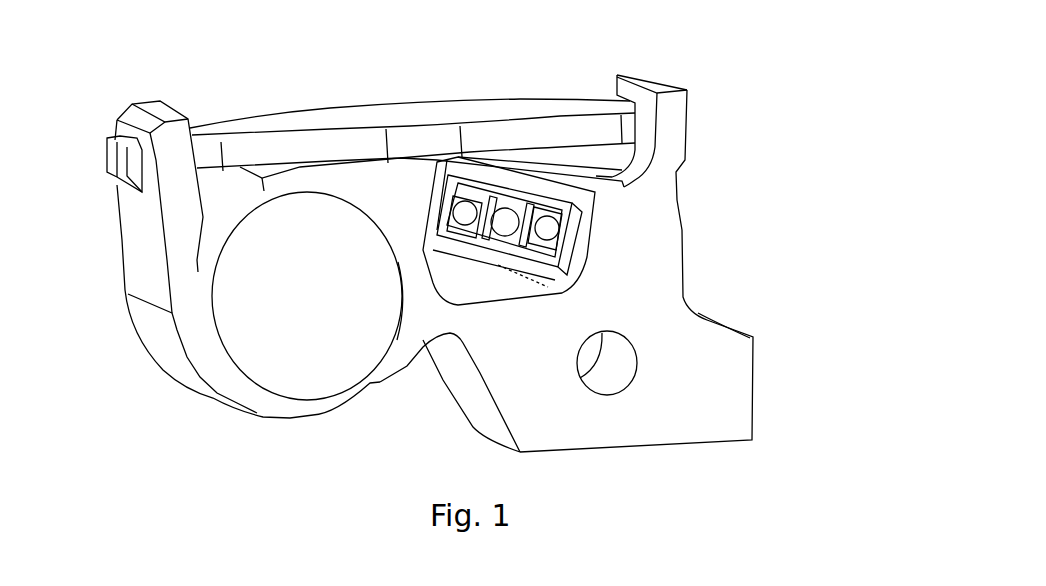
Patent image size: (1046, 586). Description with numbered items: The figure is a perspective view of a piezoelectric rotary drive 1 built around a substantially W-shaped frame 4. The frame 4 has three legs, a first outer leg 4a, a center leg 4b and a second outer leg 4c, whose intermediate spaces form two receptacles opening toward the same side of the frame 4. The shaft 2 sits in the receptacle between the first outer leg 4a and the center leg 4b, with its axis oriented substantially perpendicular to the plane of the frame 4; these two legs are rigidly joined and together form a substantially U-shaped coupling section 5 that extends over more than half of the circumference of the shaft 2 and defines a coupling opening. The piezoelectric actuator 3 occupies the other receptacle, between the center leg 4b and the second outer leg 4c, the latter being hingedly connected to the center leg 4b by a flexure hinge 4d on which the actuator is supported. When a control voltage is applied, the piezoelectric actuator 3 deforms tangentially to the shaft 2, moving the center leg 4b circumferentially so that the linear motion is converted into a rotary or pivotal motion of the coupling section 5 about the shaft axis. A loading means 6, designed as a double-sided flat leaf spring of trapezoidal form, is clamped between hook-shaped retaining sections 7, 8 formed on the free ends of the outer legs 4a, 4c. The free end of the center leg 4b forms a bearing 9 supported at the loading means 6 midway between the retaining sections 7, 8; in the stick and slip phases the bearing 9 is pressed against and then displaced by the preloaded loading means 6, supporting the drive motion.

The piezoelectric rotary drive 1 is at (522, 66).
The shaft 2 is at (318, 312).
The piezoelectric actuator 3 is at (555, 211).
The frame 4 is at (735, 281).
The first outer leg 4a is at (192, 323).
The center leg 4b is at (415, 272).
The second outer leg 4c is at (657, 204).
The flexure hinge 4d is at (450, 330).
The coupling section 5 is at (247, 483).
The loading means 6 is at (336, 88).
The retaining section 7 is at (140, 100).
The retaining section 8 is at (657, 92).
The bearing 9 is at (417, 170).